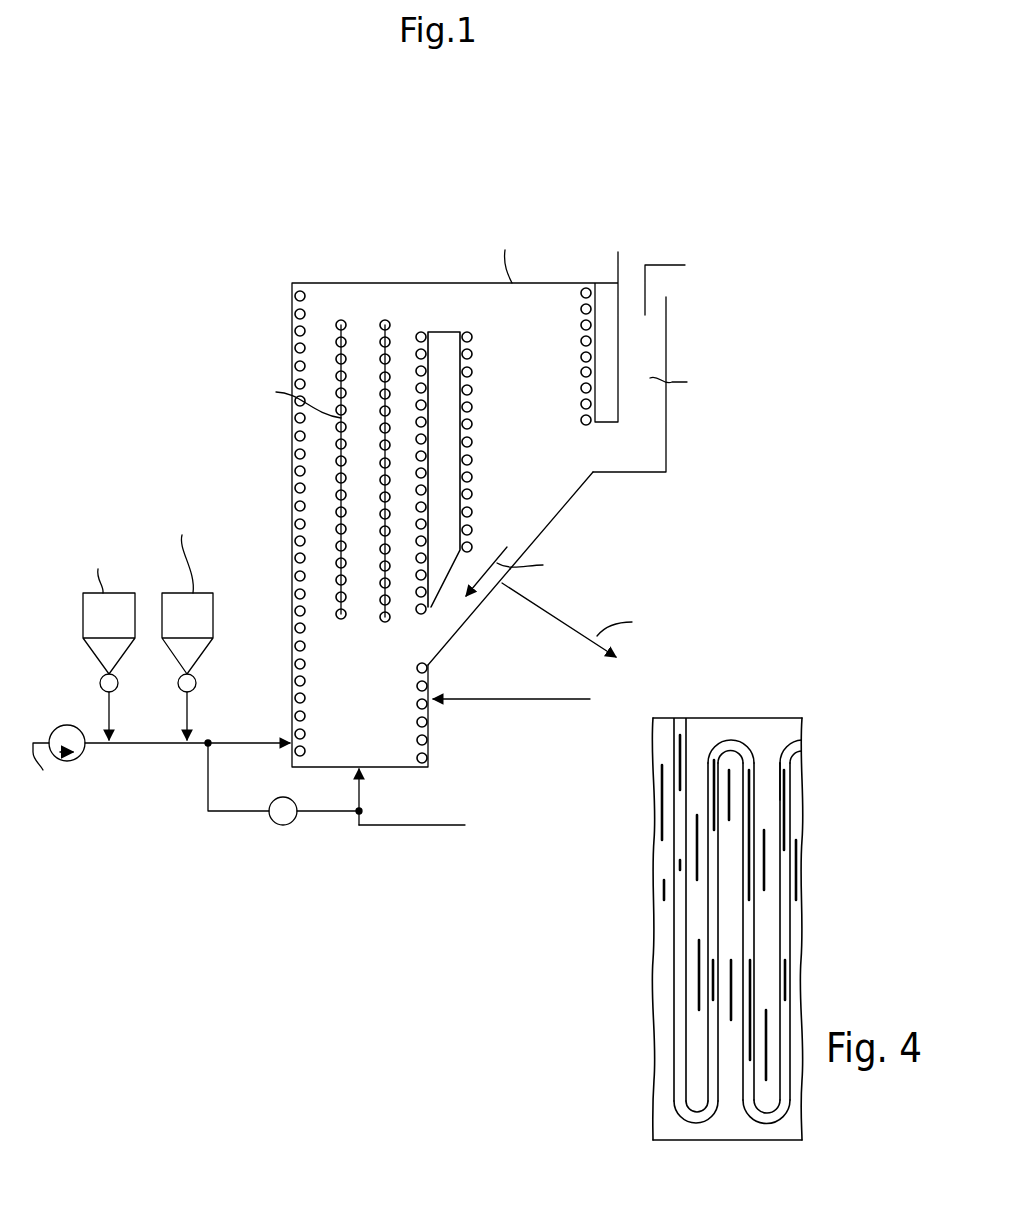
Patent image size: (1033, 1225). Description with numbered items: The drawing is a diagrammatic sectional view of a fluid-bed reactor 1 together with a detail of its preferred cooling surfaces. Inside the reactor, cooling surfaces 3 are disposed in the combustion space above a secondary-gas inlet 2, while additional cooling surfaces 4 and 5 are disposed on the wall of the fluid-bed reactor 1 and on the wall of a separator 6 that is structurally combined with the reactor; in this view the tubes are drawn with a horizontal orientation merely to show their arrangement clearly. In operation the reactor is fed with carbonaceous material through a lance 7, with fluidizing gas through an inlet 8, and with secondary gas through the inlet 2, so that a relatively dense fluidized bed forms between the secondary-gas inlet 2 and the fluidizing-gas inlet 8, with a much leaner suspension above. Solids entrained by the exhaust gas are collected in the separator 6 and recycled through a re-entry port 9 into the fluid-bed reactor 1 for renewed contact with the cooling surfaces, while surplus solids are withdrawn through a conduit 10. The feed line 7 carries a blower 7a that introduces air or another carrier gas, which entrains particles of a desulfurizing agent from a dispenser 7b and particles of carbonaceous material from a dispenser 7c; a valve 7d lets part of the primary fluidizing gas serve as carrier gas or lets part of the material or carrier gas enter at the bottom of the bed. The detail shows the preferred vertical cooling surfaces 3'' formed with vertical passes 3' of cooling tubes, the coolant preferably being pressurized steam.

In FIG. 1, the fluid-bed reactor 1 is at (292, 572).
In FIG. 1, the secondary-gas inlet 2 is at (468, 702).
In FIG. 1, the cooling surfaces 3 is at (278, 437).
In FIG. 1, the additional cooling surfaces 4 is at (292, 470).
In FIG. 1, the additional cooling surfaces 5 is at (473, 337).
In FIG. 1, the separator 6 is at (572, 483).
In FIG. 1, the lance 7 is at (245, 741).
In FIG. 1, the blower 7a is at (80, 757).
In FIG. 1, the dispenser 7b is at (92, 656).
In FIG. 1, the dispenser 7c is at (215, 635).
In FIG. 1, the valve 7d is at (283, 825).
In FIG. 1, the fluidizing-gas inlet 8 is at (357, 795).
In FIG. 1, the re-entry port 9 is at (457, 622).
In FIG. 1, the conduit 10 is at (581, 632).
In FIG. 4, the vertical passes 3' is at (820, 852).
In FIG. 4, the cooling surfaces 3'' is at (721, 921).